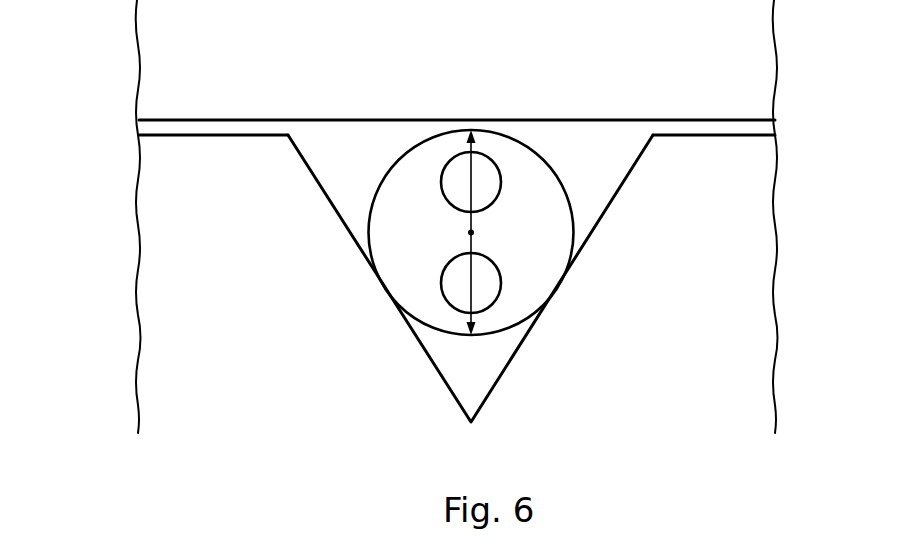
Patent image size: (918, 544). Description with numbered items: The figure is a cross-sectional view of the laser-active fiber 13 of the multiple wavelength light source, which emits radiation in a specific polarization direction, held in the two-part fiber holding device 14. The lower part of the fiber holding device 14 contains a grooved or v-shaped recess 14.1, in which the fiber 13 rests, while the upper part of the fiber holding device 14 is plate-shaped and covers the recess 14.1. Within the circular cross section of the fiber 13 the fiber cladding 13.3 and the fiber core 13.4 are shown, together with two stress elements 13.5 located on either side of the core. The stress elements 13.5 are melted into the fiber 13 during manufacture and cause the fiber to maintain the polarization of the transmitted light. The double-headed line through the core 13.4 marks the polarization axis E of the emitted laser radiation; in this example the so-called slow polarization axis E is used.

The laser-active fiber 13 is at (470, 202).
The fiber cladding 13.3 is at (409, 286).
The fiber core 13.4 is at (467, 232).
The stress elements 13.5 is at (485, 165).
The fiber holding device 14 is at (158, 72).
The v-shaped recess 14.1 is at (338, 168).
The slow polarization axis E is at (469, 227).